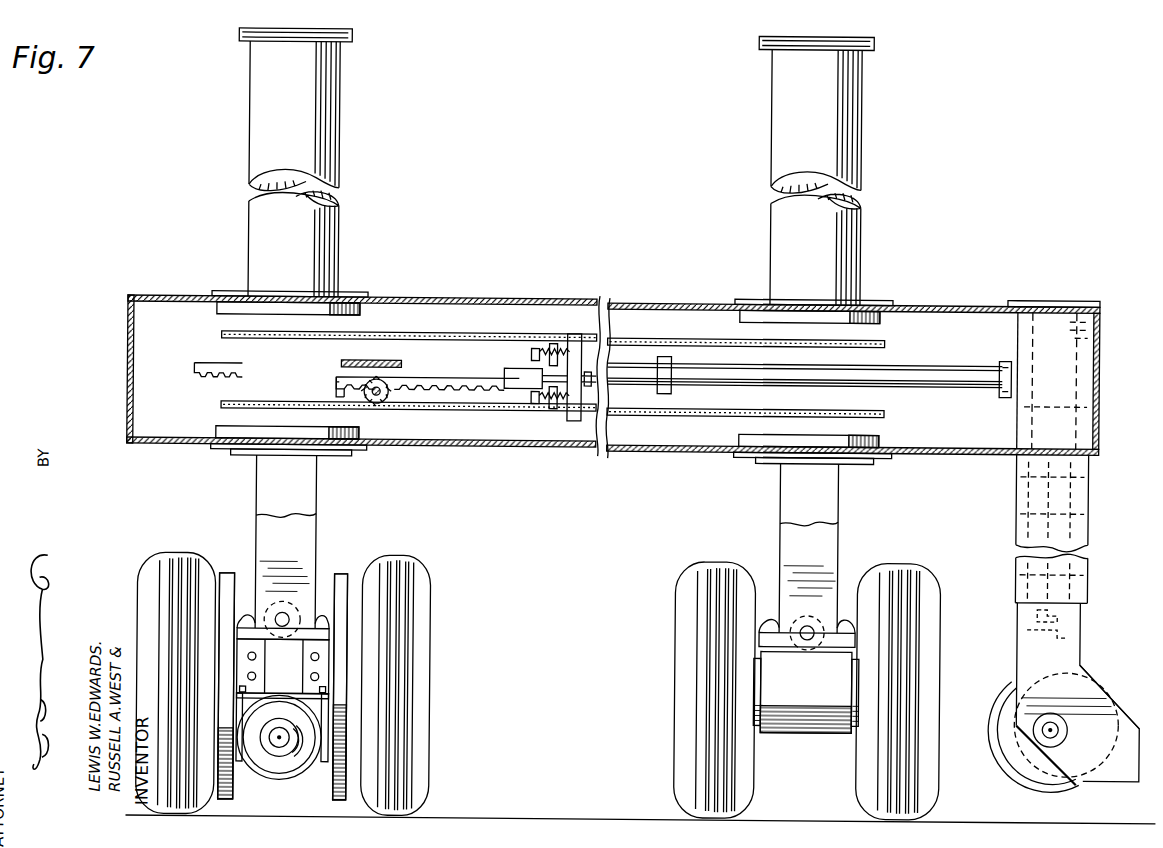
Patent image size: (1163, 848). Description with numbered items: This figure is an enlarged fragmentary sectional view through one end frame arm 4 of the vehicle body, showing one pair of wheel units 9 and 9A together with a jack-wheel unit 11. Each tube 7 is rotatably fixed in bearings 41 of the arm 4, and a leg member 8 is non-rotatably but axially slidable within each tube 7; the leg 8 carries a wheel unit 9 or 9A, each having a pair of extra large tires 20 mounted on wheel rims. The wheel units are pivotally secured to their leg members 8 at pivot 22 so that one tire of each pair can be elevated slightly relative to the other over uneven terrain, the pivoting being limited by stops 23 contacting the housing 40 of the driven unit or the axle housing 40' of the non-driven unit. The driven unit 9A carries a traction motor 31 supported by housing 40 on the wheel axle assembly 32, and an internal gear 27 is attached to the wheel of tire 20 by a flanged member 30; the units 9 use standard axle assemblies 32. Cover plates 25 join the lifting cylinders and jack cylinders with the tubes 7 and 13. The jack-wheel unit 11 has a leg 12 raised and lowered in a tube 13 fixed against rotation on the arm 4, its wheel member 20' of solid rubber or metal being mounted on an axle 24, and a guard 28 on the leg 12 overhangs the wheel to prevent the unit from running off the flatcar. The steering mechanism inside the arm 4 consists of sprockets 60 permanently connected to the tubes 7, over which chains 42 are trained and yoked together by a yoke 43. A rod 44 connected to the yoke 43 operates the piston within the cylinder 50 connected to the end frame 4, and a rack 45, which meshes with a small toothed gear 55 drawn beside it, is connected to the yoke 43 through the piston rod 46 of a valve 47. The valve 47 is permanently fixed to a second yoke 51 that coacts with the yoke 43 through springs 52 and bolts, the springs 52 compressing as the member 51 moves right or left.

The arm 4 is at (531, 443).
The tube 7 is at (312, 150).
The leg member 8 is at (318, 550).
The wheel unit structure 9 is at (905, 612).
The driven wheel unit 9A is at (425, 590).
The jack-wheel unit 11 is at (1042, 779).
The leg member 12 is at (1078, 654).
The tube 13 is at (1100, 384).
The tire 20 is at (553, 686).
The wheel member 20' is at (1010, 747).
The pivot 22 is at (290, 618).
The stop 23 is at (378, 602).
The axle 24 is at (1062, 730).
The cover member 25 is at (350, 38).
The internal gear 27 is at (232, 576).
The guard 28 is at (1132, 709).
The flanged member 30 is at (230, 628).
The motor 31 is at (297, 770).
The wheel axle assembly 32 is at (328, 692).
The housing 40 is at (366, 669).
The axle housing 40' is at (806, 720).
The bearing 41 is at (380, 290).
The chain 42 is at (485, 335).
The yoke 43 is at (600, 310).
The rod 44 is at (647, 340).
The rack 45 is at (432, 372).
The piston rod 46 is at (575, 435).
The valve 47 is at (522, 382).
The cylinder 50 is at (937, 372).
The second yoke 51 is at (577, 345).
The spring 52 is at (575, 335).
The pinion gear 55 is at (392, 392).
The sprocket 60 is at (290, 337).